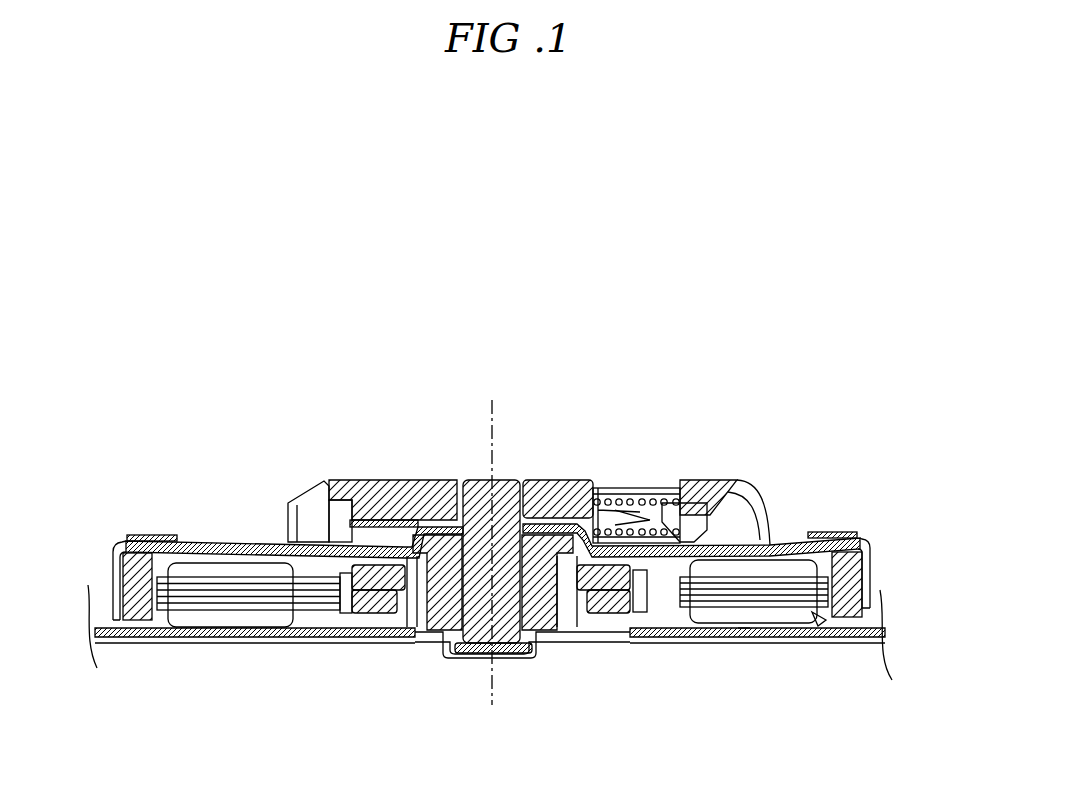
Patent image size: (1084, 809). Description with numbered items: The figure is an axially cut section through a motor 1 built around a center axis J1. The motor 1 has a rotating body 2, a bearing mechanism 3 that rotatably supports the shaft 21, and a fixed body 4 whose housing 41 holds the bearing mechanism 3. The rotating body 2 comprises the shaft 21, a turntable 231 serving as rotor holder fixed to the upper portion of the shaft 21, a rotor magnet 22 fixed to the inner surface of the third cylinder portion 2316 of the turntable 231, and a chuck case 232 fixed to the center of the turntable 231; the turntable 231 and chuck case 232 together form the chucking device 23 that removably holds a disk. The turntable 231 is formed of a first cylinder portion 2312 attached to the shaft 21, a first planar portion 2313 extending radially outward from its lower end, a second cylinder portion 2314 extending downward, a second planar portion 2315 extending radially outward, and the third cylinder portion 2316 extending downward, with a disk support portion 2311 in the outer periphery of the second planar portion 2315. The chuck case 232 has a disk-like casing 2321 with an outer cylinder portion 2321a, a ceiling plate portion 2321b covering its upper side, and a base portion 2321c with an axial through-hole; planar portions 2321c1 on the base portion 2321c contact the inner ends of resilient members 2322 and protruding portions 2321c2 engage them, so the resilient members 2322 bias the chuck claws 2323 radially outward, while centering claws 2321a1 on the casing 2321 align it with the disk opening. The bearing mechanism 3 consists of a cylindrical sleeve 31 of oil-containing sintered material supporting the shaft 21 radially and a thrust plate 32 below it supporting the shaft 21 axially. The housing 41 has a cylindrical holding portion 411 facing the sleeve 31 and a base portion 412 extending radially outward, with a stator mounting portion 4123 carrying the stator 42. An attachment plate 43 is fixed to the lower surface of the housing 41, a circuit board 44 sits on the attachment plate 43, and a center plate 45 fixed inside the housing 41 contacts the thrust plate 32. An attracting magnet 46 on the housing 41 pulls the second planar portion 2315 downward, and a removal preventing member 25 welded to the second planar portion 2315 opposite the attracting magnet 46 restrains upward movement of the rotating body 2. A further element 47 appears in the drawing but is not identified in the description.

The motor 1 is at (123, 319).
The rotating body 2 is at (107, 507).
The bearing mechanism 3 is at (363, 712).
The fixed body 4 is at (829, 670).
The shaft 21 is at (478, 500).
The rotor magnet 22 is at (140, 612).
The chucking device 23 is at (203, 388).
The removal preventing member 25 is at (345, 576).
The sleeve 31 is at (443, 608).
The thrust plate 32 is at (468, 655).
The housing 41 is at (637, 731).
The stator 42 is at (820, 618).
The attachment plate 43 is at (743, 632).
The circuit board 44 is at (793, 632).
The center plate 45 is at (518, 672).
The attracting magnet 46 is at (340, 616).
The coil support 47 is at (378, 613).
The turntable 231 is at (222, 535).
The chuck case 232 is at (336, 467).
The disk support portion 2311 is at (153, 535).
The first cylinder portion 2312 is at (425, 500).
The first planar portion 2313 is at (410, 515).
The second cylinder portion 2314 is at (390, 525).
The second planar portion 2315 is at (763, 540).
The third cylinder portion 2316 is at (866, 585).
The casing 2321 is at (631, 356).
The outer cylinder portion 2321a is at (742, 517).
The centering claws 2321a1 is at (293, 500).
The ceiling plate portion 2321b is at (637, 497).
The base portion 2321c is at (585, 497).
The planar portions 2321c1 is at (603, 497).
The protruding portions 2321c2 is at (615, 497).
The resilient members 2322 is at (692, 482).
The chuck claws 2323 is at (712, 503).
The cylindrical holding portion 411 is at (543, 602).
The base portion 412 is at (580, 590).
The stator mounting portion 4123 is at (648, 594).
The center axis J1 is at (490, 400).